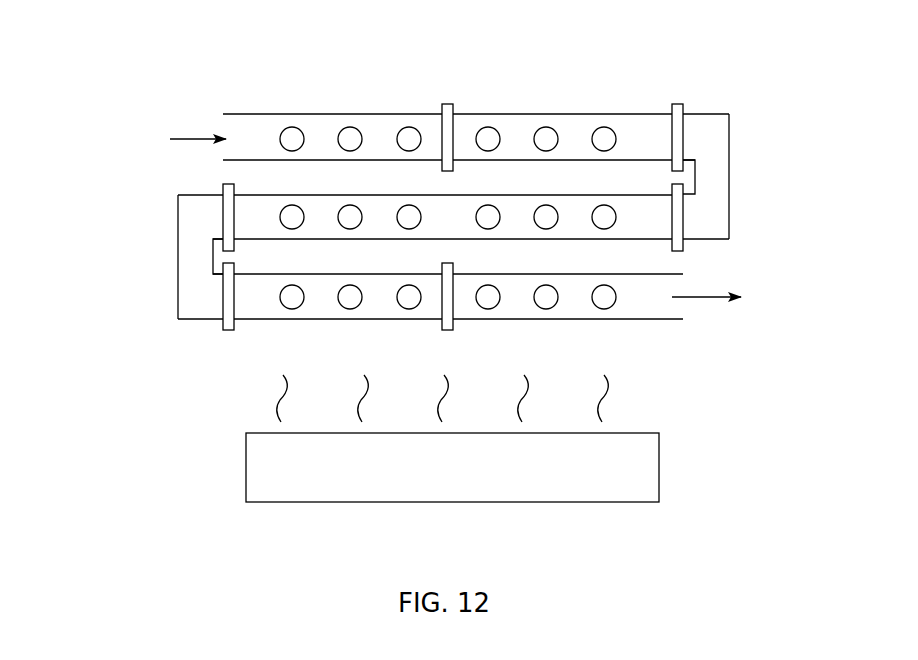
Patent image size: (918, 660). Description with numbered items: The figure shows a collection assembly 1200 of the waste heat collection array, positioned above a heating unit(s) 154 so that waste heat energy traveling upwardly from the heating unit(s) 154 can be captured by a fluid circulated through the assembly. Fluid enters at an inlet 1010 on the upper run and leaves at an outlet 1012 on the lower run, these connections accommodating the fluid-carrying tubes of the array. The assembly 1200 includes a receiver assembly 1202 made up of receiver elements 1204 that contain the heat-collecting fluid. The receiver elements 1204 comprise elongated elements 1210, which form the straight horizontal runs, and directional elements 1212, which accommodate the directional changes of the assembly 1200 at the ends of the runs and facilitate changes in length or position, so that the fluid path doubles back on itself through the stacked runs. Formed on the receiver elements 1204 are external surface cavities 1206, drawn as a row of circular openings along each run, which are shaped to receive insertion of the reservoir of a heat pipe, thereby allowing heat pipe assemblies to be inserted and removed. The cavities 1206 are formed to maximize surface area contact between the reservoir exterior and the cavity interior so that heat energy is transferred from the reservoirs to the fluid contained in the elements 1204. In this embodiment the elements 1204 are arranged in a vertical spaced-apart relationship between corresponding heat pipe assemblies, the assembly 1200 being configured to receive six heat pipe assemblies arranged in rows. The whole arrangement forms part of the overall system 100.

The apparatus 100 is at (602, 522).
The heating unit(s) 154 is at (659, 477).
The inlet 1010 is at (223, 127).
The outlet 1012 is at (683, 308).
The collection assembly 1200 is at (110, 363).
The receiver assembly 1202 is at (752, 228).
The receiver elements 1204 is at (602, 116).
The external surface cavities 1206 is at (546, 127).
The elongated elements 1210 is at (270, 319).
The directional elements 1212 is at (730, 160).